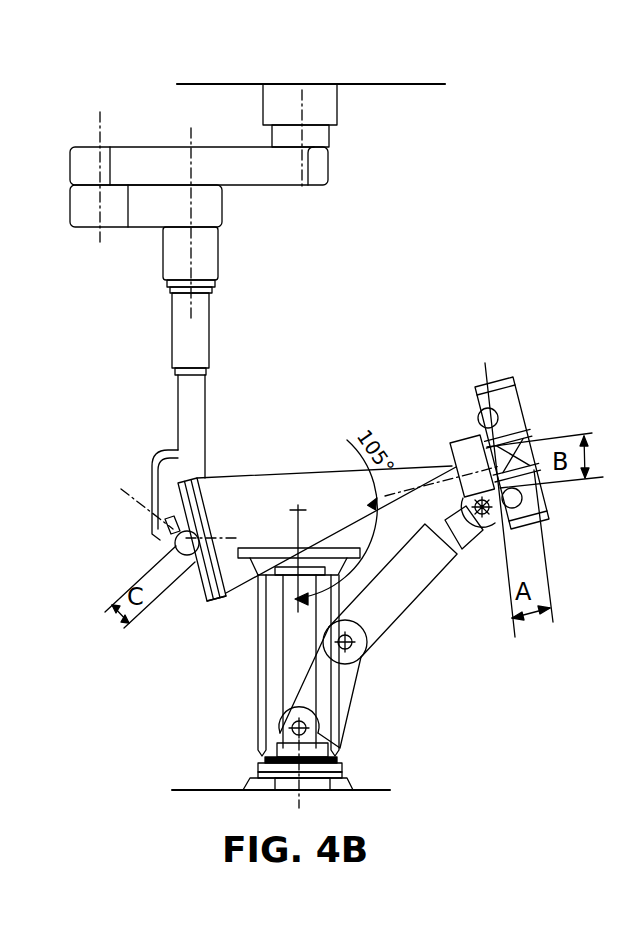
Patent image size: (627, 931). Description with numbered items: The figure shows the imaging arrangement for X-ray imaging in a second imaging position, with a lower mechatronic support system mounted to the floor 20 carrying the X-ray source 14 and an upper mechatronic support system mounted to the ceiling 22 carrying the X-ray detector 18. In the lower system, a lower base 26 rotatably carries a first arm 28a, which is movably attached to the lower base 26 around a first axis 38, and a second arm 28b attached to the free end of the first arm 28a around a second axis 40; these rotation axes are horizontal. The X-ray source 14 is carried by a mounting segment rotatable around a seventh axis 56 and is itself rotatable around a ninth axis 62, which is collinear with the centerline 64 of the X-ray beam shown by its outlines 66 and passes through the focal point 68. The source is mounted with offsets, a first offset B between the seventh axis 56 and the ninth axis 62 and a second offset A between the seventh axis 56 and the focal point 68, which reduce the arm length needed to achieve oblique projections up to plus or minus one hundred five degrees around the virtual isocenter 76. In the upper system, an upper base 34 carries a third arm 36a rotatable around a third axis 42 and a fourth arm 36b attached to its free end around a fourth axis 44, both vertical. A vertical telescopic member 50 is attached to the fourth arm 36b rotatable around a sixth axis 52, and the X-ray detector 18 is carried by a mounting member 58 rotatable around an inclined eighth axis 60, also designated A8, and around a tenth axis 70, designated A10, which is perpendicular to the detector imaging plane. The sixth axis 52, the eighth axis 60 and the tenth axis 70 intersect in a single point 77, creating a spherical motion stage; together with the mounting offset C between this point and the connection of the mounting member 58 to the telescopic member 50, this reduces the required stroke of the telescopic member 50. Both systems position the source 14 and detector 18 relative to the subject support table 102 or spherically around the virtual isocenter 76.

The X-ray source 14 is at (503, 377).
The X-ray detector 18 is at (208, 604).
The floor 20 is at (200, 790).
The ceiling 22 is at (242, 88).
The lower base 26 is at (343, 757).
The first arm 28a is at (355, 678).
The second arm 28b is at (414, 600).
The upper base 34 is at (337, 106).
The third arm 36a is at (140, 147).
The fourth arm 36b is at (142, 232).
The first axis 38 is at (318, 720).
The second axis 40 is at (366, 652).
The third axis 42 is at (310, 161).
The fourth axis 44 is at (99, 129).
The vertical telescopic member 50 is at (237, 280).
The sixth axis 52 is at (192, 246).
The seventh axis 56 is at (471, 545).
The mounting member 58 is at (160, 541).
The eighth axis 60 is at (152, 506).
The ninth axis 62 is at (486, 372).
The centerline 64 is at (449, 452).
The outlines 66 is at (300, 475).
The focal point 68 is at (531, 431).
The tenth axis 70 is at (254, 478).
The virtual isocenter 76 is at (305, 476).
The single point 77 is at (184, 560).
The subject support table 102 is at (301, 545).
The eighth axis A8 is at (129, 507).
The tenth axis A10 is at (231, 535).